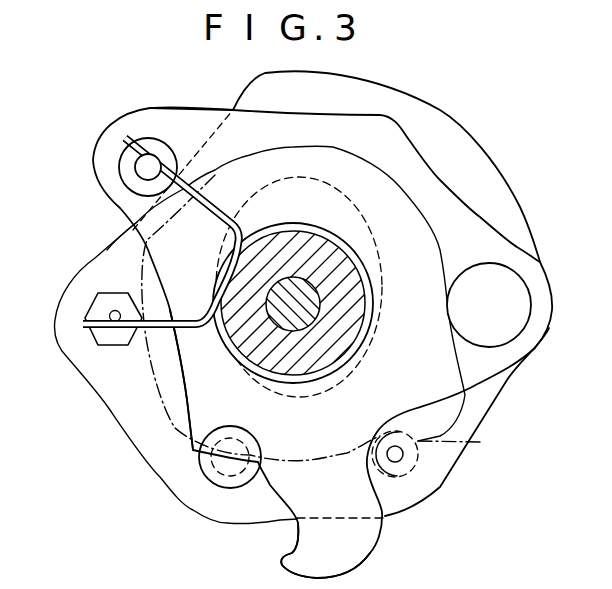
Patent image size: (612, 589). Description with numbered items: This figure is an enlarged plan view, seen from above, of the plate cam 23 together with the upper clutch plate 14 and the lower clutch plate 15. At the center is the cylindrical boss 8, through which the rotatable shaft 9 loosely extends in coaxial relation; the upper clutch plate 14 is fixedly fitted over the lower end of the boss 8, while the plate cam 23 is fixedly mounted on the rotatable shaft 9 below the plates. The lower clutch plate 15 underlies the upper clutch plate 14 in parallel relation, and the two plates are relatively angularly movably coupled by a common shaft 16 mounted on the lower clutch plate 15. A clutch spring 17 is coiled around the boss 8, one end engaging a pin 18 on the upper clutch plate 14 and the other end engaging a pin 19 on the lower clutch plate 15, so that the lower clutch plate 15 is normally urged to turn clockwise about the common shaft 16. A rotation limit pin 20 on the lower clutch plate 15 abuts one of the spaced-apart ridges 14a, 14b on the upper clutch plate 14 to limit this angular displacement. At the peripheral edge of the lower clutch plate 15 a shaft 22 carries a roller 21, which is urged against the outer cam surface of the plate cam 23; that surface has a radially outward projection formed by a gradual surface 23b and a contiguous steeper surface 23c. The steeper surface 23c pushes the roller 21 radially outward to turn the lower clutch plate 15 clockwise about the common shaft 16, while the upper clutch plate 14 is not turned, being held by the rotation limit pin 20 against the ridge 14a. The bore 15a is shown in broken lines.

The cylindrical boss 8 is at (308, 236).
The rotatable shaft 9 is at (312, 316).
The upper clutch plate 14 is at (445, 177).
The ridge 14a is at (193, 454).
The ridge 14b is at (280, 553).
The lower clutch plate 15 is at (88, 372).
The housing bore 15a is at (368, 230).
The common shaft 16 is at (520, 292).
The clutch spring 17 is at (220, 212).
The pin 18 is at (152, 162).
The pin 19 is at (116, 311).
The rotation limit pin 20 is at (213, 478).
The roller 21 is at (417, 455).
The shaft 22 is at (401, 460).
The plate cam 23 is at (158, 374).
The gradual surface 23b is at (505, 390).
The steeper surface 23c is at (469, 443).